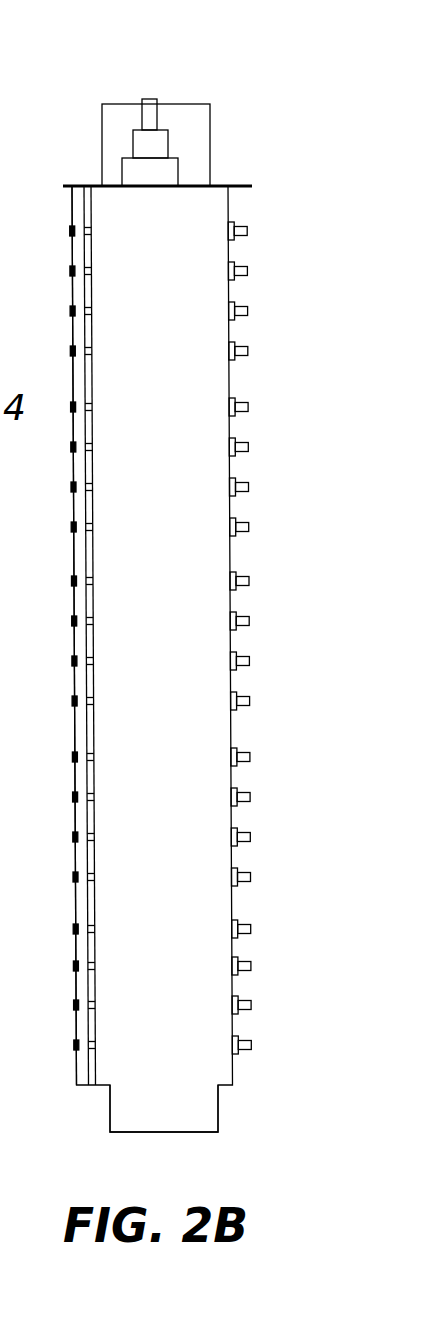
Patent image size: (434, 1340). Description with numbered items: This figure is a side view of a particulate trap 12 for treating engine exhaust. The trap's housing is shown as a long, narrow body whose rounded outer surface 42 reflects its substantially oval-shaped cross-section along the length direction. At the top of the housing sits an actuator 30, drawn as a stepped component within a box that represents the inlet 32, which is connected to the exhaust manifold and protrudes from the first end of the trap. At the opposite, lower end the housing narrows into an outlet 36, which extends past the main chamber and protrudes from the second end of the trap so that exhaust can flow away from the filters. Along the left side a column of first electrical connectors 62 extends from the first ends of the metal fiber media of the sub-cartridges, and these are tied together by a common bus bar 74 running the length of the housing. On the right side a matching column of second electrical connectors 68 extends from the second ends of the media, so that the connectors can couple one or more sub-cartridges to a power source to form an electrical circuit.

The particulate trap 12 is at (112, 65).
The actuator 30 is at (133, 133).
The inlet 32 is at (193, 104).
The outlet 36 is at (157, 1133).
The rounded outer surface 42 is at (76, 900).
The first electrical connector 62 is at (74, 1045).
The second electrical connector 68 is at (256, 1045).
The common bus bar 74 is at (74, 203).